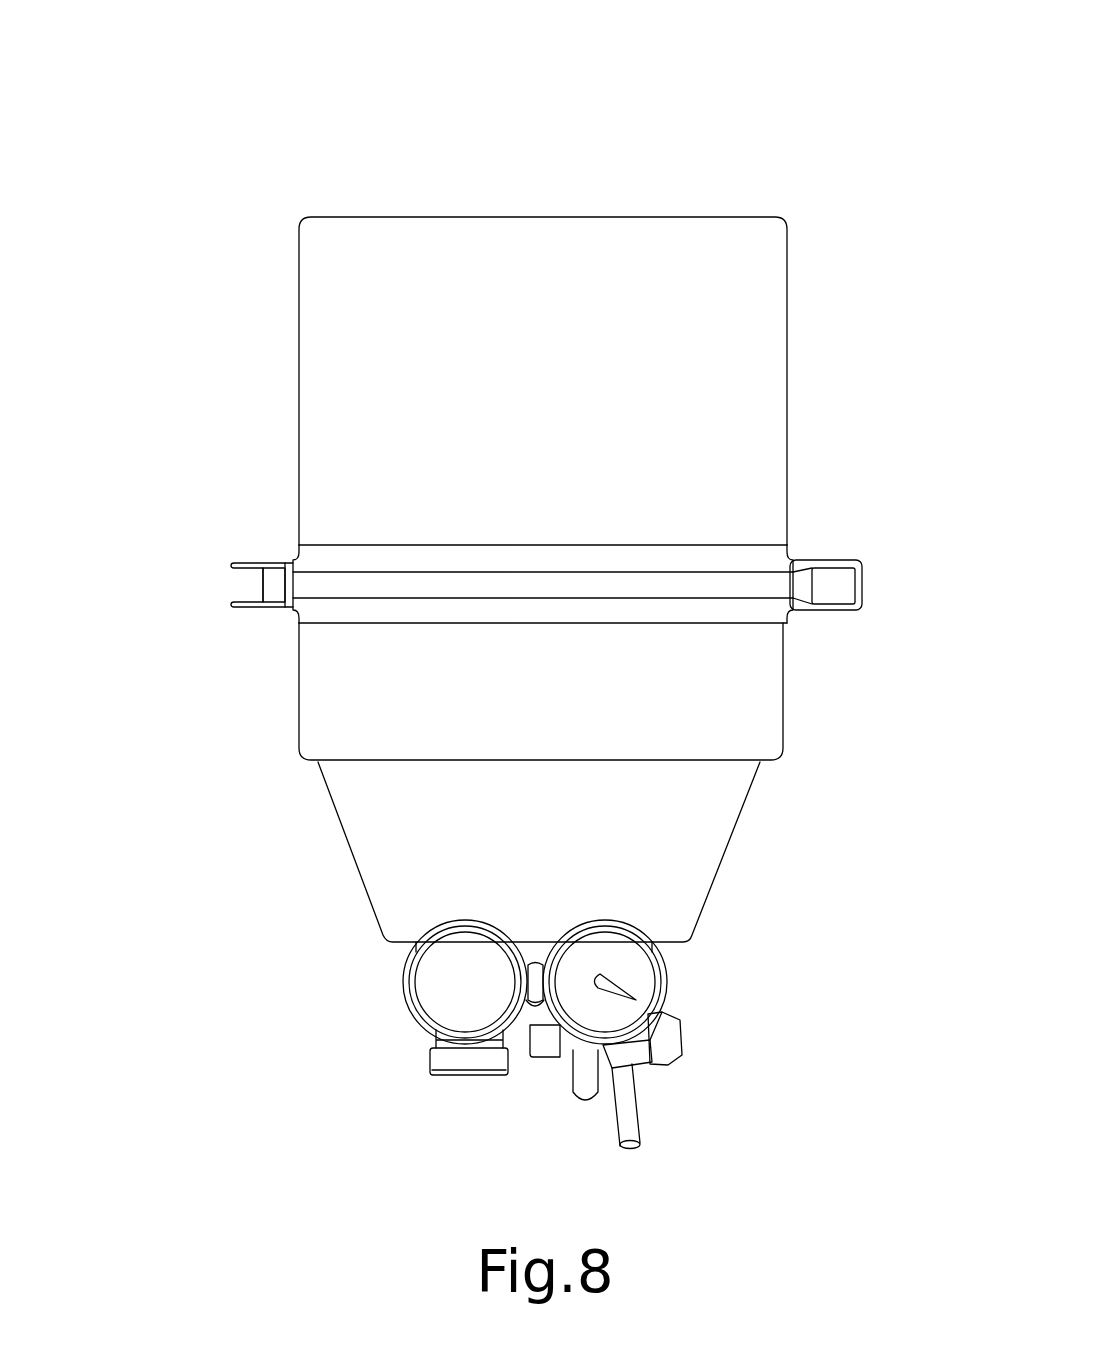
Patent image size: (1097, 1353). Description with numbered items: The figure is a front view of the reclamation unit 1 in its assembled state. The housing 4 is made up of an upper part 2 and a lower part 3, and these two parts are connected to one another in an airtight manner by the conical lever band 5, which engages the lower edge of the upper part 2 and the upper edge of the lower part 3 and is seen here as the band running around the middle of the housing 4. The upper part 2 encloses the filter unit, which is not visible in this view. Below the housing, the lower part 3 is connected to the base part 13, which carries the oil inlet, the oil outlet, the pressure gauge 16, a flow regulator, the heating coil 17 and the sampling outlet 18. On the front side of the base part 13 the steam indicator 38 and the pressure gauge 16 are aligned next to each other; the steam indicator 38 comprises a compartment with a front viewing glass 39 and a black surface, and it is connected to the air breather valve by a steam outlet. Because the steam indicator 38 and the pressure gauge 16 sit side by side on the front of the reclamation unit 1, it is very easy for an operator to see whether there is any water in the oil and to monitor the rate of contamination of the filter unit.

The reclamation unit 1 is at (704, 146).
The upper part 2 is at (763, 392).
The lower part 3 is at (775, 708).
The housing 4 is at (176, 608).
The conical lever band 5 is at (798, 565).
The base part 13 is at (535, 945).
The pressure gauge 16 is at (662, 980).
The heating coil 17 is at (636, 1128).
The sampling outlet 18 is at (570, 1052).
The steam indicator 38 is at (388, 997).
The front viewing glass 39 is at (440, 1003).